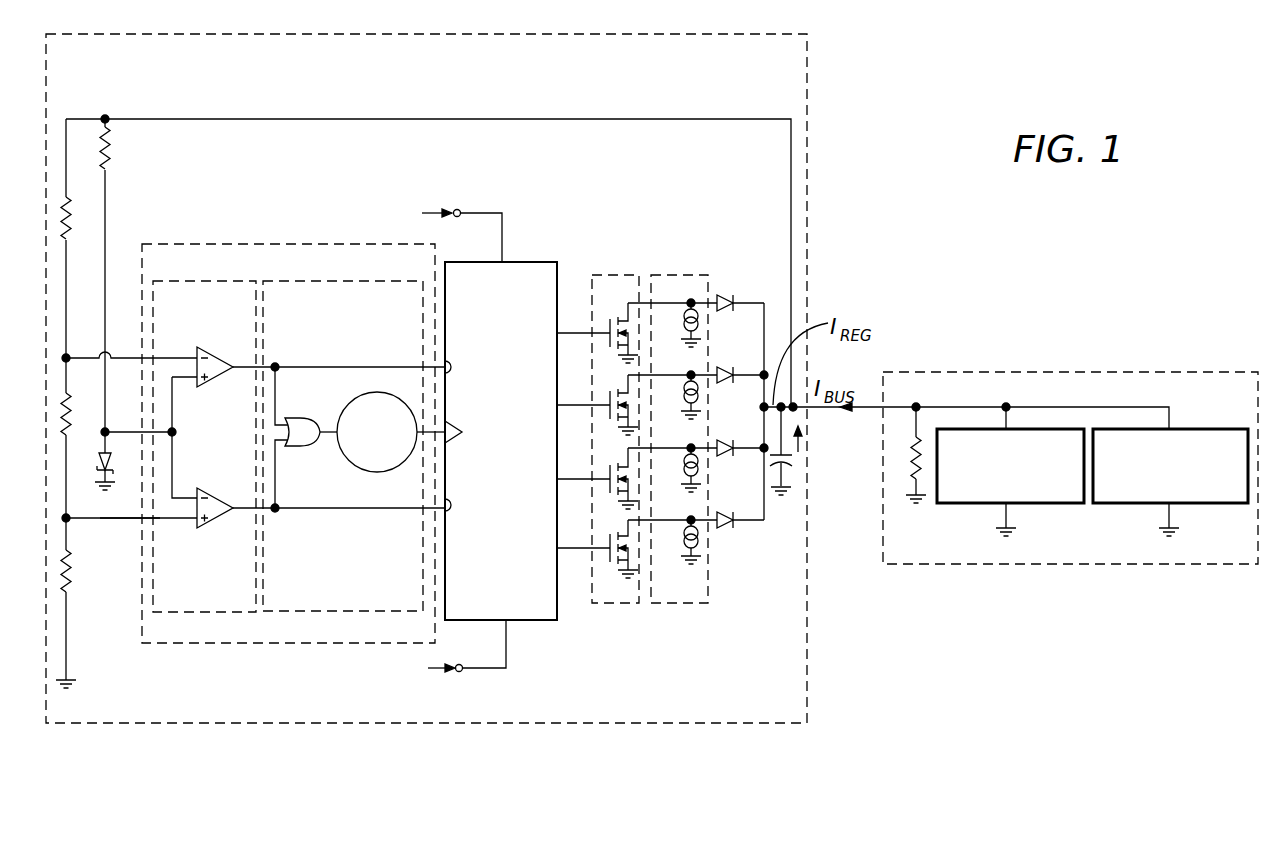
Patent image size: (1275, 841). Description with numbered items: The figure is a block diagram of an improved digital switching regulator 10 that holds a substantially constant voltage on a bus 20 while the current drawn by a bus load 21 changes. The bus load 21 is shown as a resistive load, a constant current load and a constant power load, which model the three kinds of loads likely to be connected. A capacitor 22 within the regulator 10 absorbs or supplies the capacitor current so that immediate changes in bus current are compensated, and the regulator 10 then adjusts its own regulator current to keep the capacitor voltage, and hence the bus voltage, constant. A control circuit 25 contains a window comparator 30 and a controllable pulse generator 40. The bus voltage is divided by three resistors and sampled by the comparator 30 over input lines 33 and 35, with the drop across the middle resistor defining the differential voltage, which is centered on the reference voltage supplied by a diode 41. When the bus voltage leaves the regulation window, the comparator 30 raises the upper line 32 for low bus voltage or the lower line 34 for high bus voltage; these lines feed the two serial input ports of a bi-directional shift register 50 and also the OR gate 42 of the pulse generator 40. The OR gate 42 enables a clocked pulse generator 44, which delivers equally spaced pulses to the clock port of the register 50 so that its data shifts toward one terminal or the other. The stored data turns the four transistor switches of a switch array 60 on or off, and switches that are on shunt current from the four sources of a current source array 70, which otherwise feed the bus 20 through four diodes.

The digital switching regulator 10 is at (807, 133).
The bus 20 is at (552, 119).
The bus load 21 is at (1098, 566).
The capacitor 22 is at (789, 462).
The control circuit 25 is at (195, 247).
The window comparator 30 is at (193, 285).
The upper line 32 is at (244, 373).
The input line 33 is at (86, 357).
The lower line 34 is at (240, 512).
The input line 35 is at (120, 518).
The controllable pulse generator 40 is at (320, 283).
The diode 41 is at (96, 471).
The OR gate 42 is at (299, 410).
The clocked pulse generator 44 is at (371, 474).
The bi-directional shift register 50 is at (548, 263).
The switch array 60 is at (616, 273).
The current source array 70 is at (688, 273).